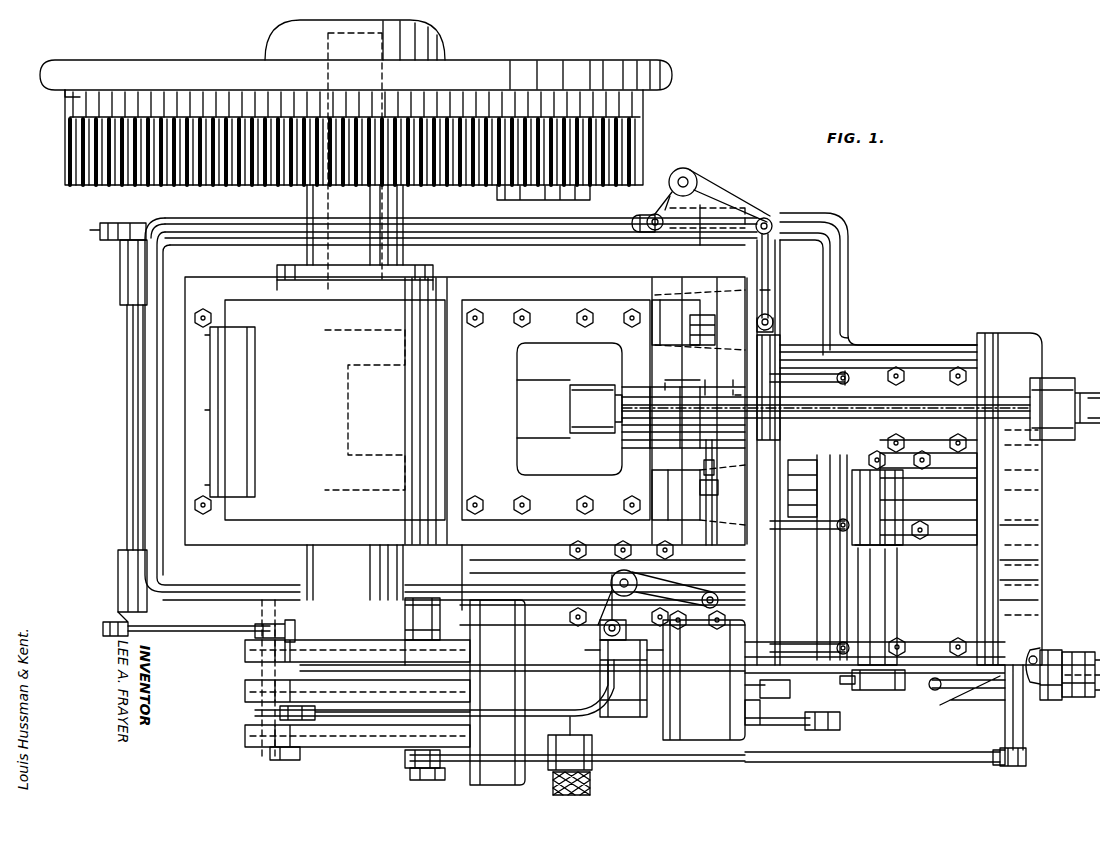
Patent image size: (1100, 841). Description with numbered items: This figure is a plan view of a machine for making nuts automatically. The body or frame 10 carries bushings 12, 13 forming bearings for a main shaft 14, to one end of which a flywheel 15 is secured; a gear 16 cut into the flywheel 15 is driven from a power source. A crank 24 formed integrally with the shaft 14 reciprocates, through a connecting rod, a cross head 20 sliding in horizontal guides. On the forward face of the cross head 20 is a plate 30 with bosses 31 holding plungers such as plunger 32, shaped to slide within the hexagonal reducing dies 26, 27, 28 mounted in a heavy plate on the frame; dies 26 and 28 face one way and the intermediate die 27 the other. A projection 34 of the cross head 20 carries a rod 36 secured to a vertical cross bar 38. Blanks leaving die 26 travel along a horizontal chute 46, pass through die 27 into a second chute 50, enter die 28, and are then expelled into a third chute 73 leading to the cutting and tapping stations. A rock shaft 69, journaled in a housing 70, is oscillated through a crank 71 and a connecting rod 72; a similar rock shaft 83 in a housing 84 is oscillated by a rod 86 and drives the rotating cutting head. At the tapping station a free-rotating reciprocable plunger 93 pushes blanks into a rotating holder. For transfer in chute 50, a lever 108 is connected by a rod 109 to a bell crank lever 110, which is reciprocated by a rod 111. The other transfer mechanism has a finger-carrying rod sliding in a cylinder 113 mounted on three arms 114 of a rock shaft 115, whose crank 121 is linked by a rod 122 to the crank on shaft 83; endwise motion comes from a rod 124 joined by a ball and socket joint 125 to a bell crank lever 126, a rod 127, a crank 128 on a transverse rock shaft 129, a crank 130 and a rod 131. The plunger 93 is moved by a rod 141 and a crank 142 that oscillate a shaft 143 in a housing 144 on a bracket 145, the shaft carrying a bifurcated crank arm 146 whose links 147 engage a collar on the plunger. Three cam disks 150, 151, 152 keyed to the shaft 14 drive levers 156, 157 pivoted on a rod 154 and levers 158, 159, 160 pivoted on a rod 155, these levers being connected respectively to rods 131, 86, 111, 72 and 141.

The body or frame 10 is at (490, 540).
The bushing 12 is at (310, 258).
The bushing 13 is at (398, 583).
The main shaft 14 is at (330, 318).
The flywheel 15 is at (562, 68).
The gear 16 is at (65, 166).
The cross head 20 is at (537, 388).
The crank 24 is at (348, 418).
The reducing die 26 is at (700, 320).
The reducing die 27 is at (733, 379).
The reducing die 28 is at (722, 495).
The plate 30 is at (682, 378).
The boss 31 is at (672, 300).
The plunger 32 is at (700, 338).
The projection 34 is at (578, 405).
The rod 36 is at (904, 410).
The cross bar 38 is at (1052, 378).
The horizontal chute 46 is at (770, 290).
The horizontal chute 50 is at (709, 378).
The rock shaft 69 is at (880, 690).
The housing 70 is at (888, 587).
The crank 71 is at (868, 690).
The connecting rod 72 is at (540, 668).
The horizontal chute 73 is at (765, 688).
The rock shaft 83 is at (633, 742).
The housing 84 is at (608, 654).
The rod 86 is at (560, 710).
The reciprocable plunger 93 is at (1050, 650).
The lever 108 is at (712, 453).
The rod 109 is at (712, 535).
The bell crank lever 110 is at (658, 605).
The rod 111 is at (487, 625).
The cylinder 113 is at (783, 387).
The arm 114 is at (788, 380).
The rock shaft 115 is at (830, 583).
The crank 121 is at (820, 730).
The rod 122 is at (777, 718).
The rod 124 is at (770, 262).
The ball and socket joint 125 is at (773, 318).
The bell crank lever 126 is at (706, 196).
The rod 127 is at (226, 226).
The crank 128 is at (100, 230).
The rock shaft 129 is at (128, 460).
The crank 130 is at (103, 628).
The rod 131 is at (182, 628).
The rod 141 is at (856, 758).
The crank 142 is at (1026, 760).
The shaft 143 is at (1000, 766).
The housing 144 is at (1024, 730).
The bracket 145 is at (993, 688).
The bifurcated crank arm 146 is at (1032, 655).
The link 147 is at (1072, 652).
The cam disk 150 is at (245, 650).
The cam disk 151 is at (245, 690).
The cam disk 152 is at (245, 738).
The rod 154 is at (283, 760).
The rod 155 is at (425, 780).
The lever 156 is at (275, 628).
The lever 157 is at (280, 713).
The lever 158 is at (430, 610).
The lever 159 is at (430, 660).
The lever 160 is at (410, 762).